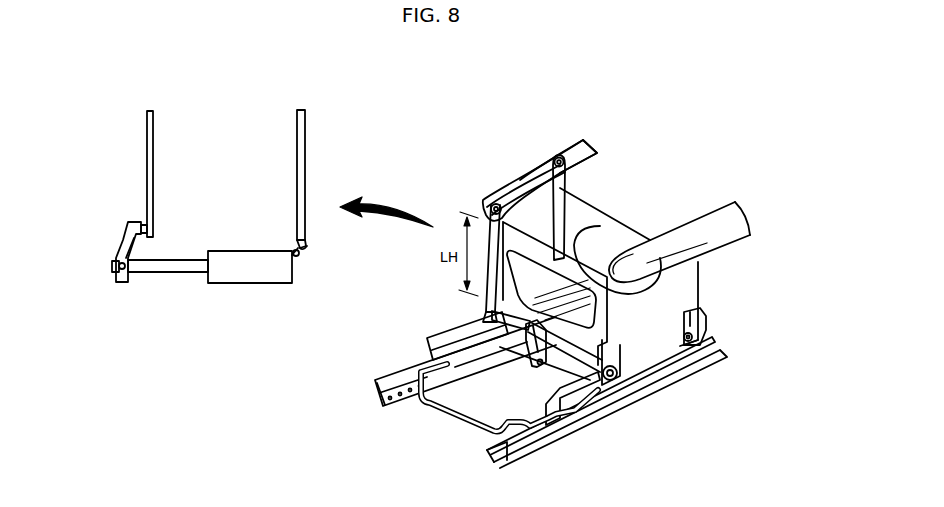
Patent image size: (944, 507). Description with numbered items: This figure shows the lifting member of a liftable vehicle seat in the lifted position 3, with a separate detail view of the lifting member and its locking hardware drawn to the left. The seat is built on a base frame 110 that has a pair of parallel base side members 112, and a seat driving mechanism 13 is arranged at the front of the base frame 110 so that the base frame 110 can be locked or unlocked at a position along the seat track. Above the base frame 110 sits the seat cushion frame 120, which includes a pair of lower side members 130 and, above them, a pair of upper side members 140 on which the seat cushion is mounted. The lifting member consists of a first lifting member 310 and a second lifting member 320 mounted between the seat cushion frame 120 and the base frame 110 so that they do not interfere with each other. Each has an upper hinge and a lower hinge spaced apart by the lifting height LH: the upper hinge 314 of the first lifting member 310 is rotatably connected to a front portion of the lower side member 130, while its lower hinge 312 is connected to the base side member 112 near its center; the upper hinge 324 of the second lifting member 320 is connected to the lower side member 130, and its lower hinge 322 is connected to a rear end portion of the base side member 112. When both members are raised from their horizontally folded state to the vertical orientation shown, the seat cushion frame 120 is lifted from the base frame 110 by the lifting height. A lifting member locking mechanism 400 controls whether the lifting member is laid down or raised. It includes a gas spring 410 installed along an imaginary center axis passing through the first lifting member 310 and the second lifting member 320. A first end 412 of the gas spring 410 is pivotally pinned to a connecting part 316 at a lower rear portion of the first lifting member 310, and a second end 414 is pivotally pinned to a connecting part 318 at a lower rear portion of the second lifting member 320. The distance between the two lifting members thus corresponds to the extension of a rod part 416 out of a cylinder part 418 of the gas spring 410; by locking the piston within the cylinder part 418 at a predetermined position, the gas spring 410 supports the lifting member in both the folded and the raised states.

The lifted position 3 is at (764, 203).
The seat driving mechanism 13 is at (443, 405).
The base frame 110 is at (427, 338).
The base side member 112 is at (583, 413).
The seat cushion frame 120 is at (574, 119).
The lower side member 130 is at (596, 150).
The upper side member 140 is at (553, 150).
The first lifting member 310 is at (147, 149).
The lower hinge 312 is at (617, 381).
The upper hinge 314 is at (485, 195).
The connecting part 316 is at (126, 245).
The connecting part 318 is at (306, 246).
The second lifting member 320 is at (297, 138).
The lower hinge 322 is at (694, 341).
The upper hinge 324 is at (544, 158).
The lifting member locking mechanism 400 is at (560, 364).
The gas spring 410 is at (283, 295).
The first end 412 is at (114, 265).
The second end 414 is at (300, 256).
The rod part 416 is at (165, 273).
The cylinder part 418 is at (252, 276).